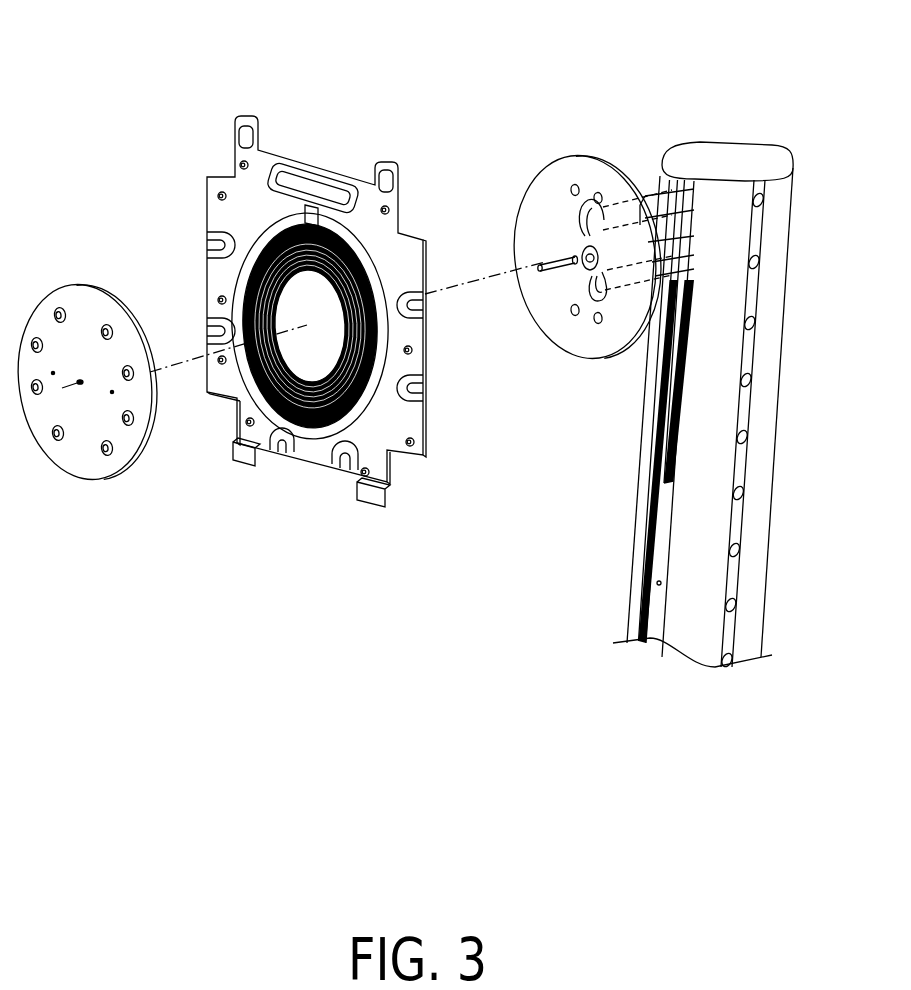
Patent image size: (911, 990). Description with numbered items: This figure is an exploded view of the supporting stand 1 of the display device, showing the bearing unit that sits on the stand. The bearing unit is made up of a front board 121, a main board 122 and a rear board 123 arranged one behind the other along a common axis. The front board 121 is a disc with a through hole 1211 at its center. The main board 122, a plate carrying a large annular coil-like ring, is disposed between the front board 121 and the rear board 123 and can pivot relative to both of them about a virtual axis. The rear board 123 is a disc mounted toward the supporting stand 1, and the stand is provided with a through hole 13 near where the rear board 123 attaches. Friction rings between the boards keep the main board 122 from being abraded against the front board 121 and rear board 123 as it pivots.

The supporting stand 1 is at (768, 323).
The front board 121 is at (83, 315).
The through hole 1211 is at (80, 388).
The main board 122 is at (262, 167).
The rear board 123 is at (585, 167).
The through hole 13 is at (568, 258).